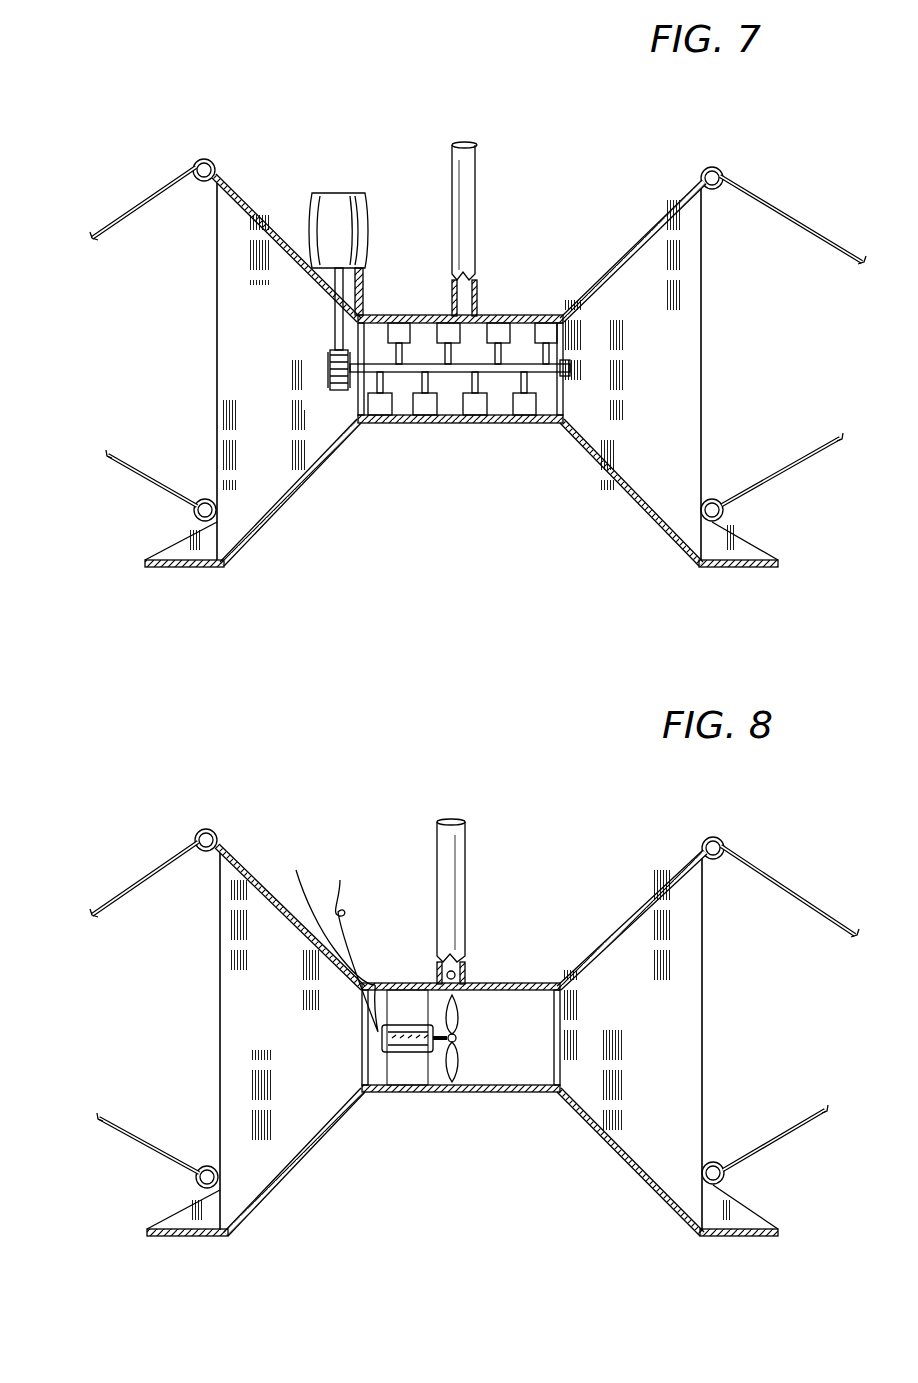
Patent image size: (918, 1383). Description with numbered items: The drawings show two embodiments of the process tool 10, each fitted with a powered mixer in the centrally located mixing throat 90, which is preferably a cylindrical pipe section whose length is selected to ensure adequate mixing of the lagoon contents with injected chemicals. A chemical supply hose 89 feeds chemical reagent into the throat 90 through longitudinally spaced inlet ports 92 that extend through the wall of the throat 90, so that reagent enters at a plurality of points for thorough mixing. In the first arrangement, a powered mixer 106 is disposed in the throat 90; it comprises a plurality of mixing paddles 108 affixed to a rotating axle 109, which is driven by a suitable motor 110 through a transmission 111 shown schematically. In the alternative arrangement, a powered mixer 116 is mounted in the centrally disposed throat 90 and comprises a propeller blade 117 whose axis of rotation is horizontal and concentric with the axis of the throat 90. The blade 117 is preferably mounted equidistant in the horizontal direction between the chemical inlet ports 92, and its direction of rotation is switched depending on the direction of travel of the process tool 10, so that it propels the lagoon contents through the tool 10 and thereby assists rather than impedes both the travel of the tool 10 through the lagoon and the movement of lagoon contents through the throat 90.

In FIG. 7, the process tool 10 is at (250, 118).
In FIG. 8, the process tool 10 is at (328, 800).
In FIG. 7, the chemical supply hose 89 is at (465, 181).
In FIG. 8, the chemical supply hose 89 is at (462, 862).
In FIG. 7, the mixing throat 90 is at (435, 428).
In FIG. 8, the mixing throat 90 is at (527, 1096).
In FIG. 8, the inlet ports 92 is at (455, 975).
In FIG. 7, the powered mixer 106 is at (503, 330).
In FIG. 7, the mixing paddles 108 is at (397, 330).
In FIG. 7, the rotating axle 109 is at (352, 382).
In FIG. 7, the motor 110 is at (340, 193).
In FIG. 7, the transmission 111 is at (326, 365).
In FIG. 8, the powered mixer 116 is at (482, 1040).
In FIG. 8, the propeller blade 117 is at (457, 1068).